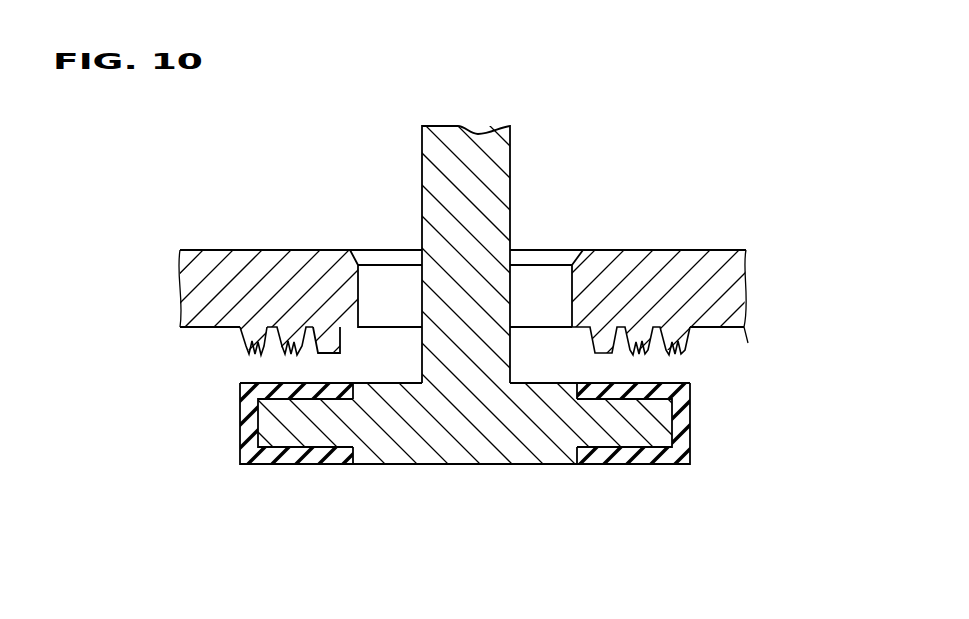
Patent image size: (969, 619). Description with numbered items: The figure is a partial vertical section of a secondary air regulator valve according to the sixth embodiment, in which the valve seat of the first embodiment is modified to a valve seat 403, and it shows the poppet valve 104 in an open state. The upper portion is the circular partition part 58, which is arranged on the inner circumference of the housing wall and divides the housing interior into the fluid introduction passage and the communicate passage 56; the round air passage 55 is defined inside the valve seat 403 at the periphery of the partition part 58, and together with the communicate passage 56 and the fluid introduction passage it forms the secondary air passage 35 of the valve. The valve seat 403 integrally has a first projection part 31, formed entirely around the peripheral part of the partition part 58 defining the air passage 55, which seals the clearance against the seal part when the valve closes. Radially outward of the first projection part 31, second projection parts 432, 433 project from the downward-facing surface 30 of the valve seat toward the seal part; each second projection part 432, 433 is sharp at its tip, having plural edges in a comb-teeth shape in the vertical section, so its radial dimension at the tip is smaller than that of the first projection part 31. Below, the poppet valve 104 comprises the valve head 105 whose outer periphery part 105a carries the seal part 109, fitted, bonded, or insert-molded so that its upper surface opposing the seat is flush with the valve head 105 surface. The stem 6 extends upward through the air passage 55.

The shaft 6 is at (433, 169).
The secondary air passage 35 is at (534, 176).
The air passage 55 is at (540, 275).
The partition part 58 is at (711, 276).
The surface of the valve seat 30 is at (748, 343).
The valve seat 403 is at (712, 349).
The second projection part 433 is at (248, 345).
The second projection part 432 is at (283, 352).
The first projection part 31 is at (338, 348).
The outer periphery part 105a is at (255, 413).
The seal part 109 is at (292, 458).
The valve head 105 is at (461, 430).
The poppet valve 104 is at (650, 476).
The communicate passage 56 is at (728, 438).